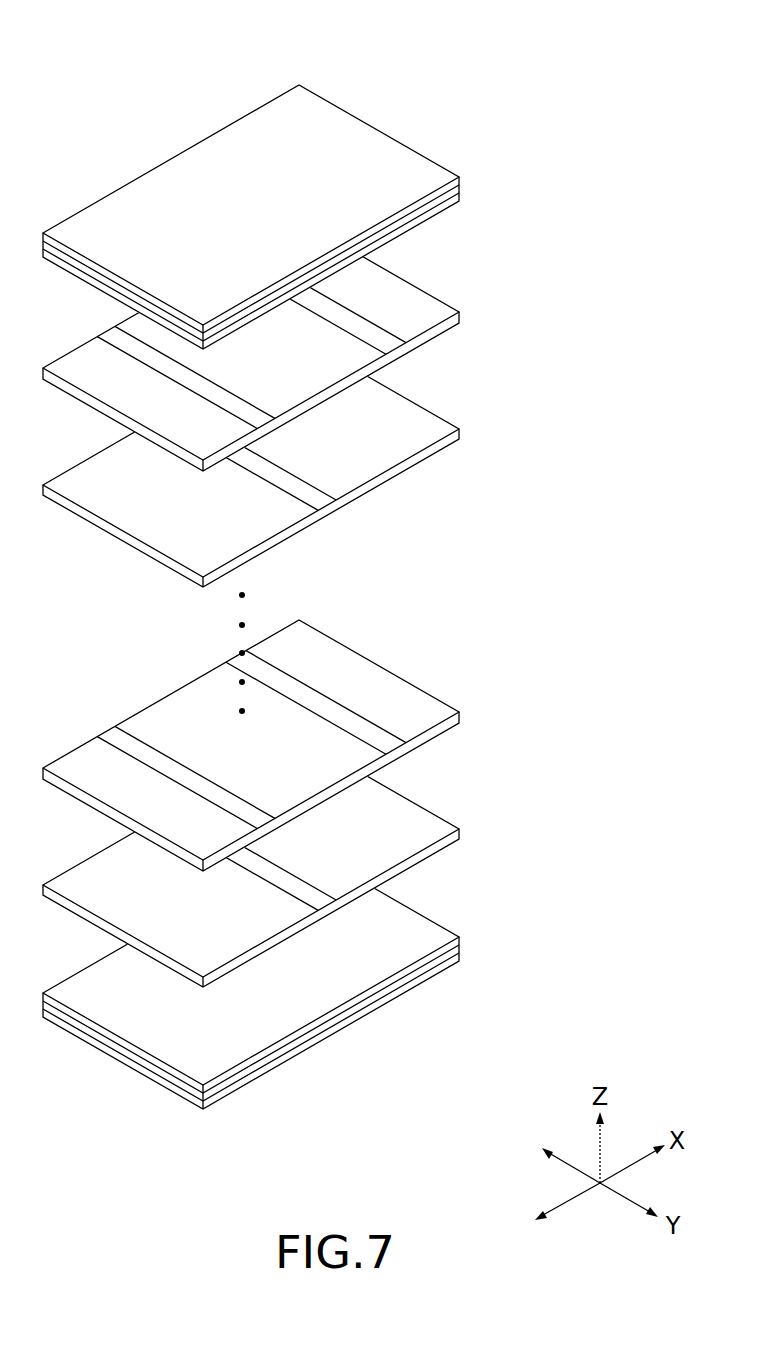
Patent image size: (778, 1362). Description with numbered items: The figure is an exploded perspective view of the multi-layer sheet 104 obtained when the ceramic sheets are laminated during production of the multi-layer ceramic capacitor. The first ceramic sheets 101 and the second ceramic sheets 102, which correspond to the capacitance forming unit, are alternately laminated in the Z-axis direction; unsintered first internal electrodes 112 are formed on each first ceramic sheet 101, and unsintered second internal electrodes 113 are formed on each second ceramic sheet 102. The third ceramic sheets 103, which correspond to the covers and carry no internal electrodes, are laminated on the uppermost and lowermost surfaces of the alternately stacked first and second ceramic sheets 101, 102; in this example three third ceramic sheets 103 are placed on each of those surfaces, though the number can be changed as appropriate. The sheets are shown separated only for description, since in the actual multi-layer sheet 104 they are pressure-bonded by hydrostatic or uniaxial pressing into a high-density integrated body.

The first ceramic sheet 101 is at (468, 307).
The second ceramic sheet 102 is at (468, 425).
The third ceramic sheet 103 is at (468, 187).
The multi-layer sheet 104 is at (408, 100).
The unsintered first internal electrode 112 is at (73, 363).
The unsintered second internal electrode 113 is at (75, 480).